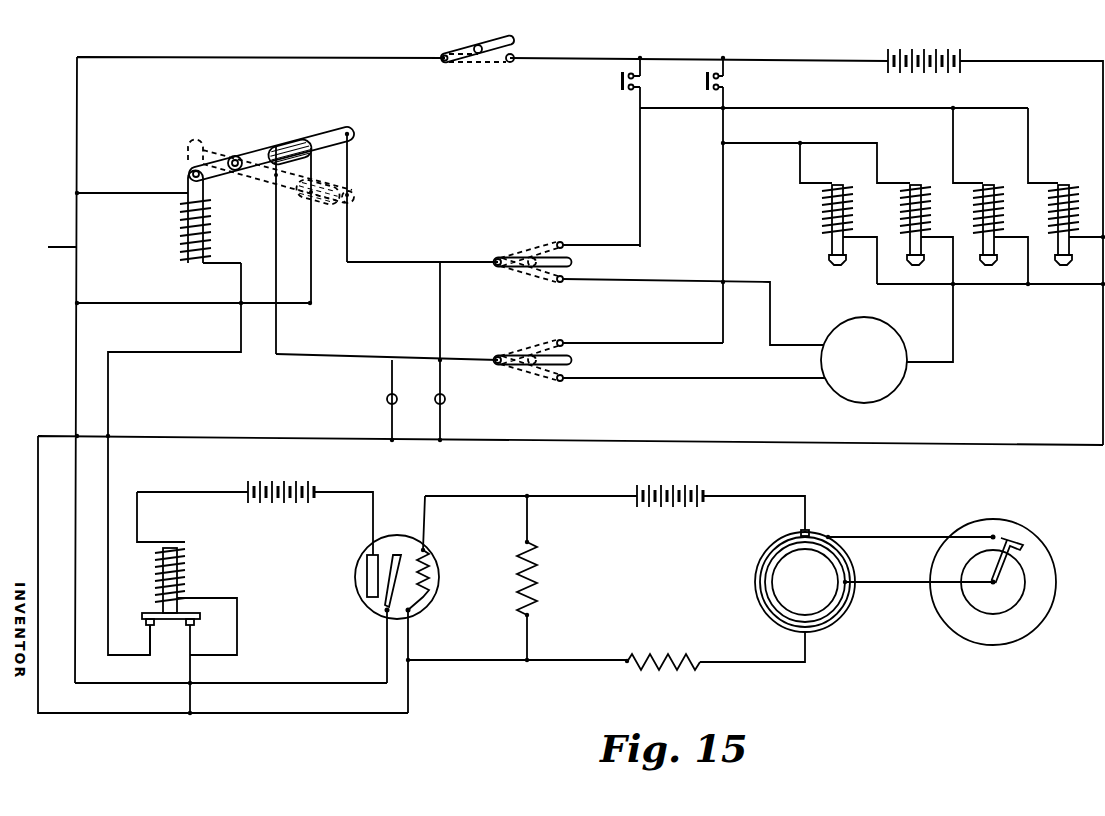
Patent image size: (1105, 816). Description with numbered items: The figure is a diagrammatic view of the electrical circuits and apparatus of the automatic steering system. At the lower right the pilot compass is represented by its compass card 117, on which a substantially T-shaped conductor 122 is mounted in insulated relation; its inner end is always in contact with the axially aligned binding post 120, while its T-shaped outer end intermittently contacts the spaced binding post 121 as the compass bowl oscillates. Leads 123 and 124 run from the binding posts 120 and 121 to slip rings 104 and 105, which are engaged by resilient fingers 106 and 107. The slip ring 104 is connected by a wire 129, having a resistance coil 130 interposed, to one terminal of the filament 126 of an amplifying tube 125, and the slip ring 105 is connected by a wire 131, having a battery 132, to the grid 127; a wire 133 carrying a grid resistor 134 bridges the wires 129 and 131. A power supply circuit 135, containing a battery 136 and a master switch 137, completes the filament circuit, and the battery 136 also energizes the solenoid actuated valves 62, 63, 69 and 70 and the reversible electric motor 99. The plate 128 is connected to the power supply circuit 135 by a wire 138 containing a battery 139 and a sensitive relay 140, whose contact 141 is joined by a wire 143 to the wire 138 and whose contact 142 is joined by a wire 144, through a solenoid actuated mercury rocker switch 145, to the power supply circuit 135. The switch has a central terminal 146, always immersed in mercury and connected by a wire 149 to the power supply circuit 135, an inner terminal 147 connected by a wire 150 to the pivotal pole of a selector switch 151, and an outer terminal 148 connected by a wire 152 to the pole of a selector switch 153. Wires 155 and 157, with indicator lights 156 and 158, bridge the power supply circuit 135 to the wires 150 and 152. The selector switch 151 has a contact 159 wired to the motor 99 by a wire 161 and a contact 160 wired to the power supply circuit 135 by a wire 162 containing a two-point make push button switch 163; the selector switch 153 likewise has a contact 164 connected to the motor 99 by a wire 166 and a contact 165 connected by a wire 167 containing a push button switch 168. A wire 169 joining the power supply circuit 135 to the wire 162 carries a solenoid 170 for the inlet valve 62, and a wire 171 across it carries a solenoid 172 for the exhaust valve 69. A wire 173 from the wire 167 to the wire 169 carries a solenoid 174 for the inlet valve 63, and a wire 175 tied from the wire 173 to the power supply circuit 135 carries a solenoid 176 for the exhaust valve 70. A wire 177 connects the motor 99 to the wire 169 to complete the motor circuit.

The fluid pressure inlet valve 62 is at (832, 265).
The fluid pressure exhaust valve 69 is at (910, 265).
The fluid pressure inlet valve 63 is at (1002, 265).
The fluid pressure exhaust valve 70 is at (1065, 265).
The reversible electric motor 99 is at (837, 397).
The slip ring 104 is at (768, 588).
The slip ring 105 is at (767, 558).
The resilient finger 106 is at (805, 615).
The resilient finger 107 is at (797, 533).
The compass card 117 is at (965, 638).
The binding post 120 is at (997, 585).
The binding post 121 is at (993, 537).
The T-shaped conductor 122 is at (1003, 568).
The lead 123 is at (903, 588).
The lead 124 is at (883, 537).
The amplifying tube 125 is at (437, 545).
The filament 126 is at (399, 555).
The grid 127 is at (428, 578).
The plate 128 is at (367, 580).
The wire 129 is at (760, 663).
The resistance coil 130 is at (663, 673).
The wire 131 is at (587, 495).
The battery 132 is at (677, 485).
The wire 133 is at (527, 632).
The grid resistor 134 is at (537, 575).
The power supply circuit 135 is at (232, 733).
The battery 136 is at (922, 50).
The master switch 137 is at (466, 50).
The wire 138 is at (255, 623).
The battery 139 is at (290, 480).
The sensitive relay 140 is at (180, 565).
The relay contact 141 is at (200, 623).
The relay contact 142 is at (145, 623).
The wire 143 is at (188, 638).
The wire 144 is at (108, 492).
The mercury rocker switch 145 is at (253, 147).
The central terminal 146 is at (312, 147).
The inner terminal 147 is at (277, 147).
The outer terminal 148 is at (347, 132).
The wire 149 is at (157, 304).
The wire 150 is at (287, 359).
The selector switch 151 is at (522, 364).
The wire 152 is at (377, 260).
The selector switch 153 is at (537, 260).
The wire 155 is at (392, 372).
The indicator light 156 is at (387, 400).
The wire 157 is at (440, 317).
The indicator light 158 is at (447, 400).
The selector switch contact 159 is at (562, 381).
The selector switch contact 160 is at (563, 340).
The wire 161 is at (700, 375).
The wire 162 is at (723, 205).
The push button switch 163 is at (705, 80).
The selector switch contact 164 is at (562, 282).
The selector switch contact 165 is at (563, 243).
The wire 166 is at (648, 272).
The wire 167 is at (640, 151).
The push button switch 168 is at (620, 80).
The wire 169 is at (977, 315).
The solenoid 170 is at (830, 207).
The wire 171 is at (847, 143).
The solenoid 172 is at (907, 220).
The wire 173 is at (820, 108).
The solenoid 174 is at (983, 220).
The wire 175 is at (1030, 143).
The solenoid 176 is at (1058, 222).
The wire 177 is at (953, 342).